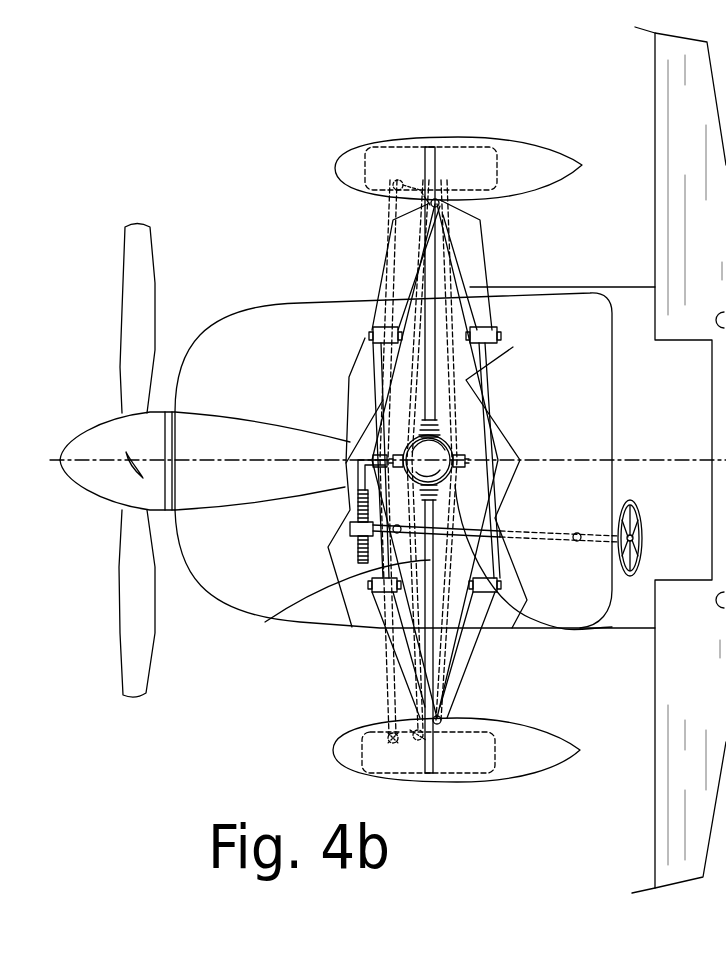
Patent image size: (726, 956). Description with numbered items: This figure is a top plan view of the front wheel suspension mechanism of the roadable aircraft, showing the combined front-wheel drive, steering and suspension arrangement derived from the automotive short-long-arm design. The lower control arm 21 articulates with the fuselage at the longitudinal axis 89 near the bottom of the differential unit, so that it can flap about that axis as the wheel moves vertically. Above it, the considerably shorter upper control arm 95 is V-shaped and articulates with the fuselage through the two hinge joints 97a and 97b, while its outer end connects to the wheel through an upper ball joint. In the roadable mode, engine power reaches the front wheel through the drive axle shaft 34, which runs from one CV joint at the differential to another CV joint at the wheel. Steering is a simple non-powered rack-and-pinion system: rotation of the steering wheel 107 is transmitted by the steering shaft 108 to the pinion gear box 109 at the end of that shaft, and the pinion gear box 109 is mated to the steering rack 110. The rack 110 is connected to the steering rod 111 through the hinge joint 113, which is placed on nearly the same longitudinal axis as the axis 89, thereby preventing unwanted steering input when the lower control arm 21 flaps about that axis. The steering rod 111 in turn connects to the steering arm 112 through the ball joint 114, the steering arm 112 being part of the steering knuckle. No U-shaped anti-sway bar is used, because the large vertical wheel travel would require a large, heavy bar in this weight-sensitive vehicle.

The lower control arm 21 is at (410, 332).
The drive axle shaft 34 is at (428, 378).
The longitudinal axis 89 is at (400, 447).
The upper control arm 95 is at (462, 657).
The hinge joint 97a is at (372, 590).
The hinge joint 97b is at (498, 600).
The steering wheel 107 is at (637, 503).
The steering shaft 108 is at (523, 527).
The pinion gear box 109 is at (350, 522).
The steering rack 110 is at (355, 540).
The steering rod 111 is at (352, 564).
The steering arm 112 is at (418, 730).
The hinge joint 113 is at (348, 437).
The ball joint 114 is at (365, 740).